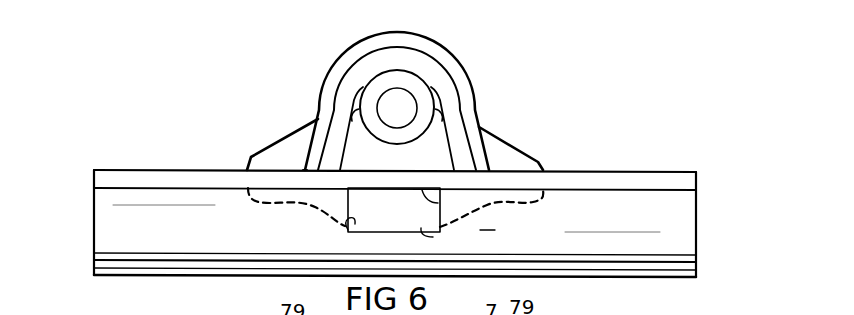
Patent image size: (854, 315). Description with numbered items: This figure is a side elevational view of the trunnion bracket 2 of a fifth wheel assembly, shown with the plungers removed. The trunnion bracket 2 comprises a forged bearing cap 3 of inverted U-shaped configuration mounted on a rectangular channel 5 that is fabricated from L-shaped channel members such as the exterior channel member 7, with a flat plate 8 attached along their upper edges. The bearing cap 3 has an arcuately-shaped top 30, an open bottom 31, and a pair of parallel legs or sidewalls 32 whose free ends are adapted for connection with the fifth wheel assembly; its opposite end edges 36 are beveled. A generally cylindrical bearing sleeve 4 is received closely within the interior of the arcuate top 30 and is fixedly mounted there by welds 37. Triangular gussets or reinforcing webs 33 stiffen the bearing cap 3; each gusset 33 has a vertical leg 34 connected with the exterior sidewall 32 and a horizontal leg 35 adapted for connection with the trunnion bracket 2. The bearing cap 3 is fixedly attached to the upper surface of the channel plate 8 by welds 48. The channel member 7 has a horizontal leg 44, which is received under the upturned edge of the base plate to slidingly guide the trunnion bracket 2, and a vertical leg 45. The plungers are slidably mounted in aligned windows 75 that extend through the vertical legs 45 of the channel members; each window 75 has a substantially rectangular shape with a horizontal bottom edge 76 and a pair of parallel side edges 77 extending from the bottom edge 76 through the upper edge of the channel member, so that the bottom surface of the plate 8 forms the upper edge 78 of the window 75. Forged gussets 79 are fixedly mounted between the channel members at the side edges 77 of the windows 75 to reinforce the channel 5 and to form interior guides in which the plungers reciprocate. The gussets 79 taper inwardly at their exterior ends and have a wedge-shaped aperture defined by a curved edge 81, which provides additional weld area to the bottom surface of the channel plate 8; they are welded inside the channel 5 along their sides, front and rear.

The trunnion bracket 2 is at (152, 161).
The bearing cap 3 is at (421, 33).
The bearing sleeve 4 is at (368, 90).
The rectangular channel 5 is at (697, 208).
The L-shaped channel member 7 is at (697, 237).
The flat plate 8 is at (615, 180).
The arcuately-shaped top 30 is at (375, 33).
The open bottom 31 is at (357, 145).
The sidewall 32 is at (466, 77).
The gusset 33 is at (253, 157).
The vertical leg 34 is at (482, 142).
The horizontal leg 35 is at (518, 170).
The end edge 36 is at (352, 53).
The weld 37 is at (437, 123).
The horizontal leg 44 is at (120, 265).
The vertical leg 45 is at (105, 210).
The weld 48 is at (305, 170).
The window 75 is at (402, 223).
The bottom edge 76 is at (433, 237).
The side edge 77 is at (345, 227).
The upper edge 78 is at (438, 203).
The forged gusset 79 is at (288, 203).
The edge 81 is at (501, 233).